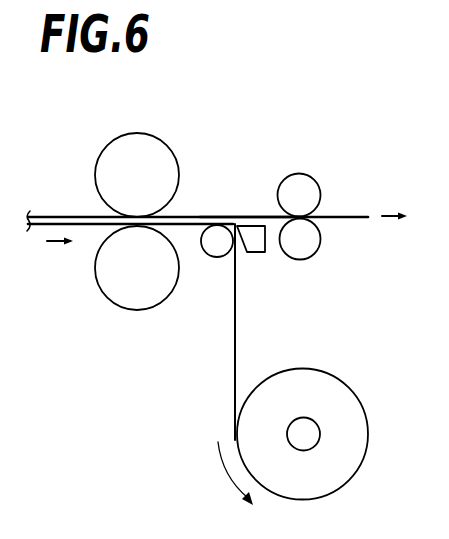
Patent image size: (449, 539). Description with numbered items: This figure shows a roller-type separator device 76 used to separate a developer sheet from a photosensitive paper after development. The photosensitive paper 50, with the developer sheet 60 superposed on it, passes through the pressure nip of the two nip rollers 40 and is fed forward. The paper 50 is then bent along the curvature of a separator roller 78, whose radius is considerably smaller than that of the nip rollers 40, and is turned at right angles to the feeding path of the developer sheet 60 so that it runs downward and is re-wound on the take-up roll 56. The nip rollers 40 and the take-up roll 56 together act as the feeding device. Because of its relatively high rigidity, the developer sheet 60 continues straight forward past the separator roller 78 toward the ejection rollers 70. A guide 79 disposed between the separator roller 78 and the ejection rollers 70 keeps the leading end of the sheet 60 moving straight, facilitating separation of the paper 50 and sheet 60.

The separator device 76 is at (234, 112).
The nip rollers 40 is at (137, 135).
The developer sheet 60 is at (250, 215).
The ejection rollers 70 is at (300, 183).
The separator roller 78 is at (213, 248).
The guide 79 is at (258, 252).
The photosensitive paper 50 is at (236, 330).
The take-up roll 56 is at (358, 432).